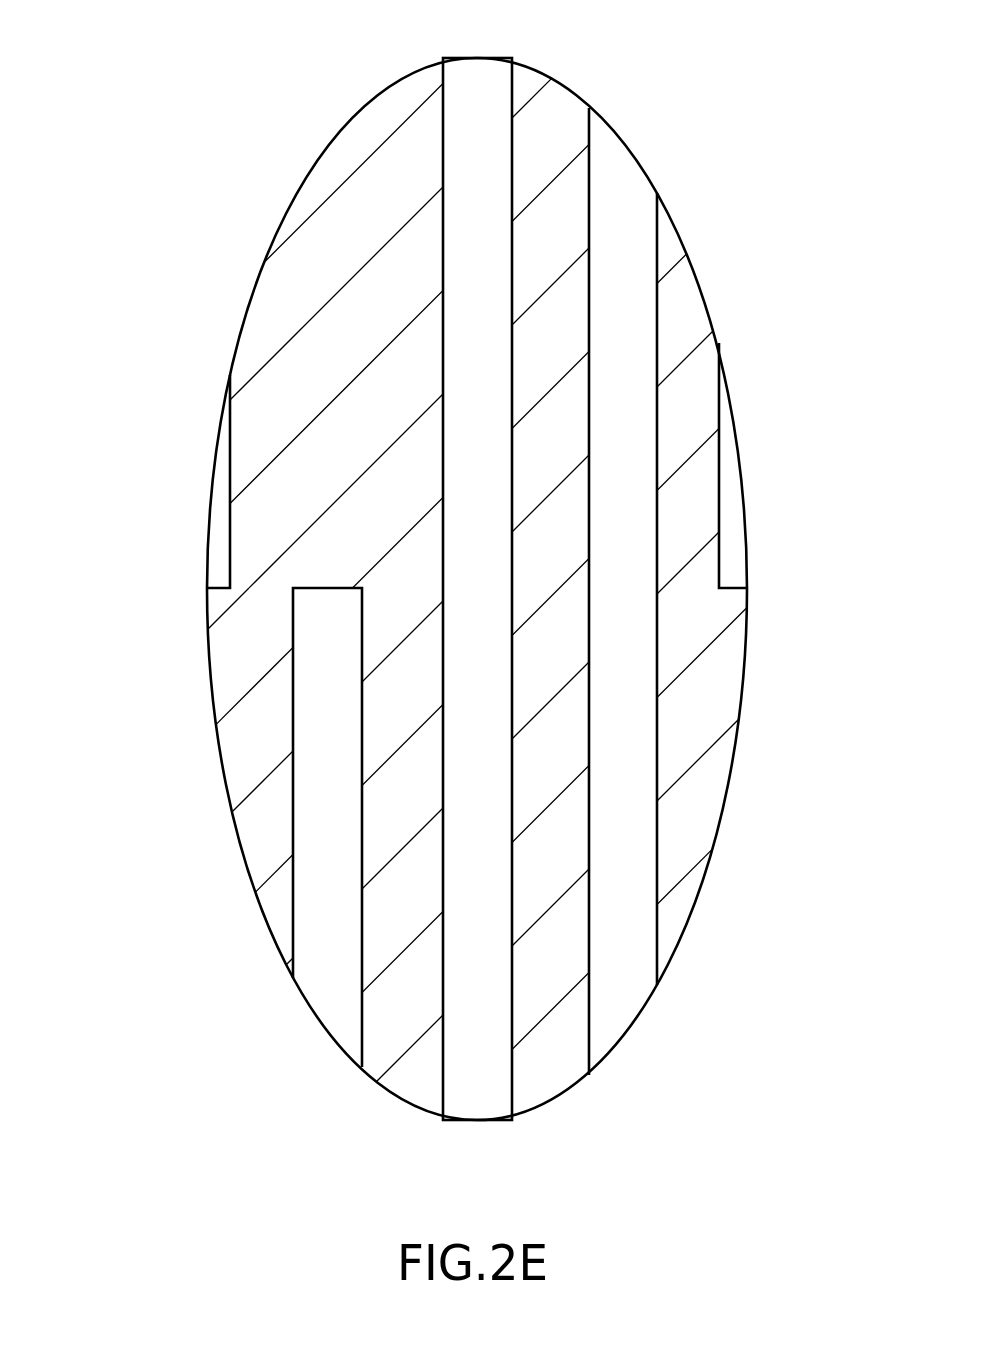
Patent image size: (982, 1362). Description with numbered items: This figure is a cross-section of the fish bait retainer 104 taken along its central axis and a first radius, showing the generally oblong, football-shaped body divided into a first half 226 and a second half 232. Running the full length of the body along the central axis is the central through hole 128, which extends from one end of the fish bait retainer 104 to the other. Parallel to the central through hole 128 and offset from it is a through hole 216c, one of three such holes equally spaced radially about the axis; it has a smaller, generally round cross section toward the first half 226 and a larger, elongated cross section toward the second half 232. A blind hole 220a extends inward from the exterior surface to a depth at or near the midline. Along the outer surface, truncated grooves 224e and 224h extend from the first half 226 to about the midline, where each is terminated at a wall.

The fish bait retainer 104 is at (322, 128).
The first half 226 is at (387, 108).
The central through hole 128 is at (492, 1106).
The second half 232 is at (563, 1082).
The through hole 216c is at (635, 870).
The truncated groove 224e is at (213, 540).
The truncated groove 224h is at (733, 487).
The blind hole 220a is at (327, 1002).